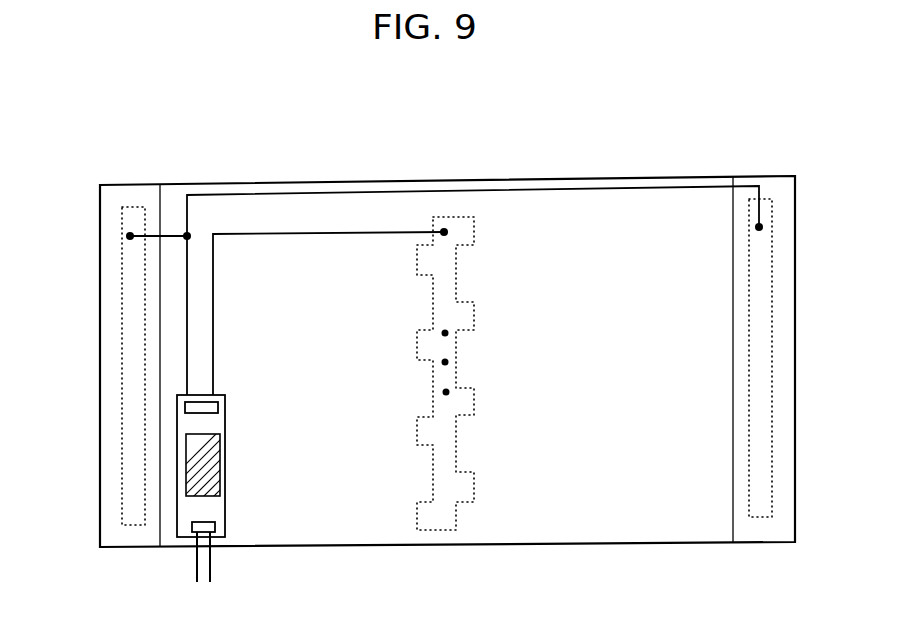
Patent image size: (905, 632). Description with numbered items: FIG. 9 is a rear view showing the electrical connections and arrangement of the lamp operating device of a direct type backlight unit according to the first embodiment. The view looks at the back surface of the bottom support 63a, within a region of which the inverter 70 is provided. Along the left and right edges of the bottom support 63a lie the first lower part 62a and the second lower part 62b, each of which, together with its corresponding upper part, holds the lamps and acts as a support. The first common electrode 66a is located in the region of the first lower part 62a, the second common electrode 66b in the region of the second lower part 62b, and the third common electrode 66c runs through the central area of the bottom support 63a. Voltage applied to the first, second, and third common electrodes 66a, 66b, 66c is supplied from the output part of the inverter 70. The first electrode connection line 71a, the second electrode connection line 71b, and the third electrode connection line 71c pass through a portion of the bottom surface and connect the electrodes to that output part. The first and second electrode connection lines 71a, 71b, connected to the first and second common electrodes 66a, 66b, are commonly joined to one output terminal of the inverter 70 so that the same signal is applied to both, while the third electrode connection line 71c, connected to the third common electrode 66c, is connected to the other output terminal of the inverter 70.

The bottom support 63a is at (655, 544).
The first lower part 62a is at (108, 506).
The second lower part 62b is at (788, 458).
The first common electrode 66a is at (128, 452).
The second common electrode 66b is at (765, 408).
The third common electrode 66c is at (456, 282).
The inverter 70 is at (227, 423).
The first electrode connection line 71a is at (173, 233).
The second electrode connection line 71b is at (621, 190).
The third electrode connection line 71c is at (295, 232).